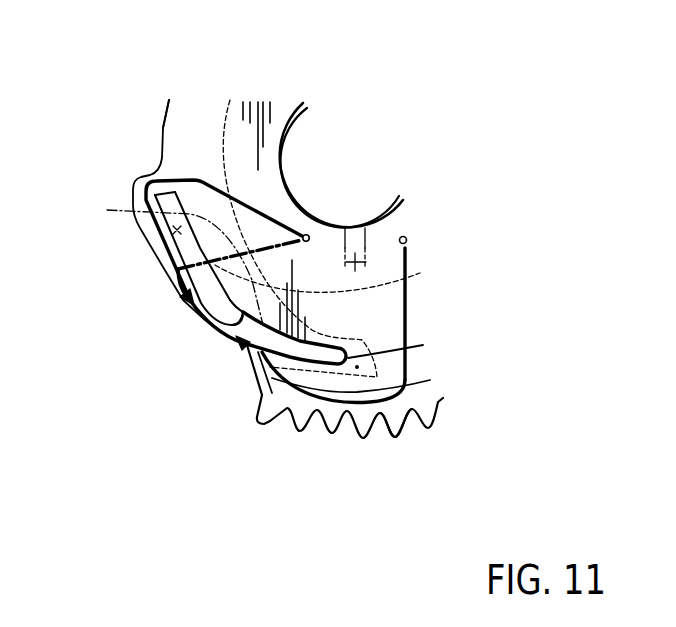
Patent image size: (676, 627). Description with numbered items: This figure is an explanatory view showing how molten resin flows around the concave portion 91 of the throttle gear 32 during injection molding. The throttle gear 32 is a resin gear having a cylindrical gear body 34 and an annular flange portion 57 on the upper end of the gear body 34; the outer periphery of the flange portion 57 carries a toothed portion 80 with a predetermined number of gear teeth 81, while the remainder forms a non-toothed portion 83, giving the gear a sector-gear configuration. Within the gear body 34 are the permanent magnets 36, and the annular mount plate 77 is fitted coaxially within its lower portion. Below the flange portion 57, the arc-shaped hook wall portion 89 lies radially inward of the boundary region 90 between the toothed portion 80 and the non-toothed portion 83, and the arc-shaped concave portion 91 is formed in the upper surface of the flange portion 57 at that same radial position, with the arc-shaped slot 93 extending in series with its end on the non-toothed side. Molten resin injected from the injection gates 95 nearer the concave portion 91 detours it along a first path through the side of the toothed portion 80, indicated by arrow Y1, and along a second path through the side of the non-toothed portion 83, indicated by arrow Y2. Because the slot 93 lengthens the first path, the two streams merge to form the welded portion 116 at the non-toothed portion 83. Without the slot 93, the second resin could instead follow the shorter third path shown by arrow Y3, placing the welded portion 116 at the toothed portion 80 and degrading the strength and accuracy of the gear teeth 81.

The throttle gear 32 is at (148, 151).
The non-toothed portion 83 is at (162, 126).
The flange portion 57 is at (185, 118).
The gear body 34 is at (242, 150).
The mount plate 77 is at (308, 143).
The permanent magnets 36 is at (363, 281).
The injection gates 95 is at (309, 235).
The boundary region 90 is at (243, 353).
The concave portion 91 is at (226, 332).
The arrow Y2 is at (167, 262).
The slot 93 is at (175, 231).
The arrow Y3 is at (166, 260).
The welded portion 116 is at (183, 313).
The hook wall portion 89 is at (356, 370).
The arrow Y1 is at (286, 404).
The toothed portion 80 is at (363, 440).
The gear teeth 81 is at (397, 432).